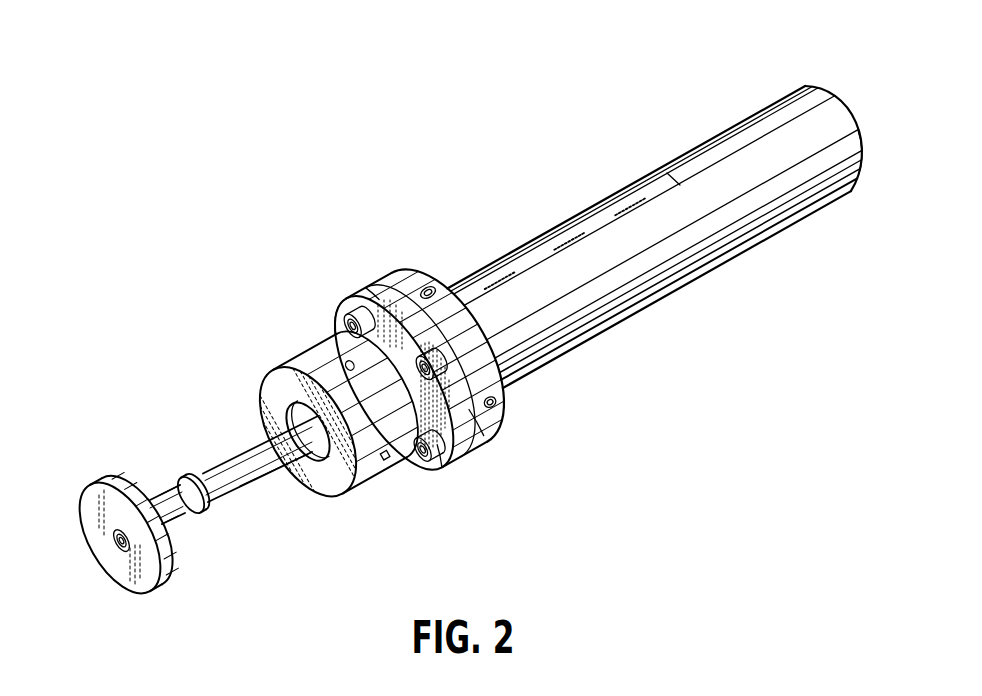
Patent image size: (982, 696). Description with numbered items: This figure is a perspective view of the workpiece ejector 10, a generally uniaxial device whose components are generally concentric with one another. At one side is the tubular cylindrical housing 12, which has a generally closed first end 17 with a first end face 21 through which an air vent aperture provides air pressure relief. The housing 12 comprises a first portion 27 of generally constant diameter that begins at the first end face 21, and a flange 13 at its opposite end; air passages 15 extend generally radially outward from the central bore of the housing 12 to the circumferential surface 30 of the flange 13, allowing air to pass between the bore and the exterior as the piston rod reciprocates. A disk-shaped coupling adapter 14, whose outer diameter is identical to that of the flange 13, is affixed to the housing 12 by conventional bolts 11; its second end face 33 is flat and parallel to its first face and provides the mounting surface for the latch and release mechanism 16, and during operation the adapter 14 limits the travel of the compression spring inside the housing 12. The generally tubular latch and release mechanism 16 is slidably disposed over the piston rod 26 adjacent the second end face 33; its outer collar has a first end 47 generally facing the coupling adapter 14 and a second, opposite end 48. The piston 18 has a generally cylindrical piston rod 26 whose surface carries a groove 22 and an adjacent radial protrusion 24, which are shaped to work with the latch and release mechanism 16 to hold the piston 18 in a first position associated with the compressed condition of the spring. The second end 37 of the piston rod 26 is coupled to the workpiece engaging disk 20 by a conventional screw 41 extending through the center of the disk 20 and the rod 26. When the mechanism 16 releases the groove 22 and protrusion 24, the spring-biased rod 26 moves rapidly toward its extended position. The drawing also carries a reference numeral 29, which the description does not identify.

The workpiece ejector 10 is at (366, 176).
The bolts 11 is at (345, 321).
The tubular cylindrical housing 12 is at (712, 133).
The flange 13 is at (406, 270).
The coupling adapter 14 is at (357, 293).
The air passages 15 is at (432, 285).
The latch and release mechanism 16 is at (298, 353).
The first end 17 is at (805, 90).
The piston 18 is at (252, 444).
The workpiece engaging disk 20 is at (100, 490).
The first end face 21 is at (864, 152).
The groove 22 is at (178, 487).
The radial protrusion 24 is at (192, 487).
The piston rod 26 is at (263, 478).
The first portion 27 is at (706, 283).
The flange outer edge 29 is at (483, 452).
The circumferential surface 30 is at (498, 388).
The second end face 33 is at (447, 442).
The second end 37 is at (178, 527).
The screw 41 is at (110, 548).
The first end 47 is at (384, 286).
The second end 48 is at (265, 395).